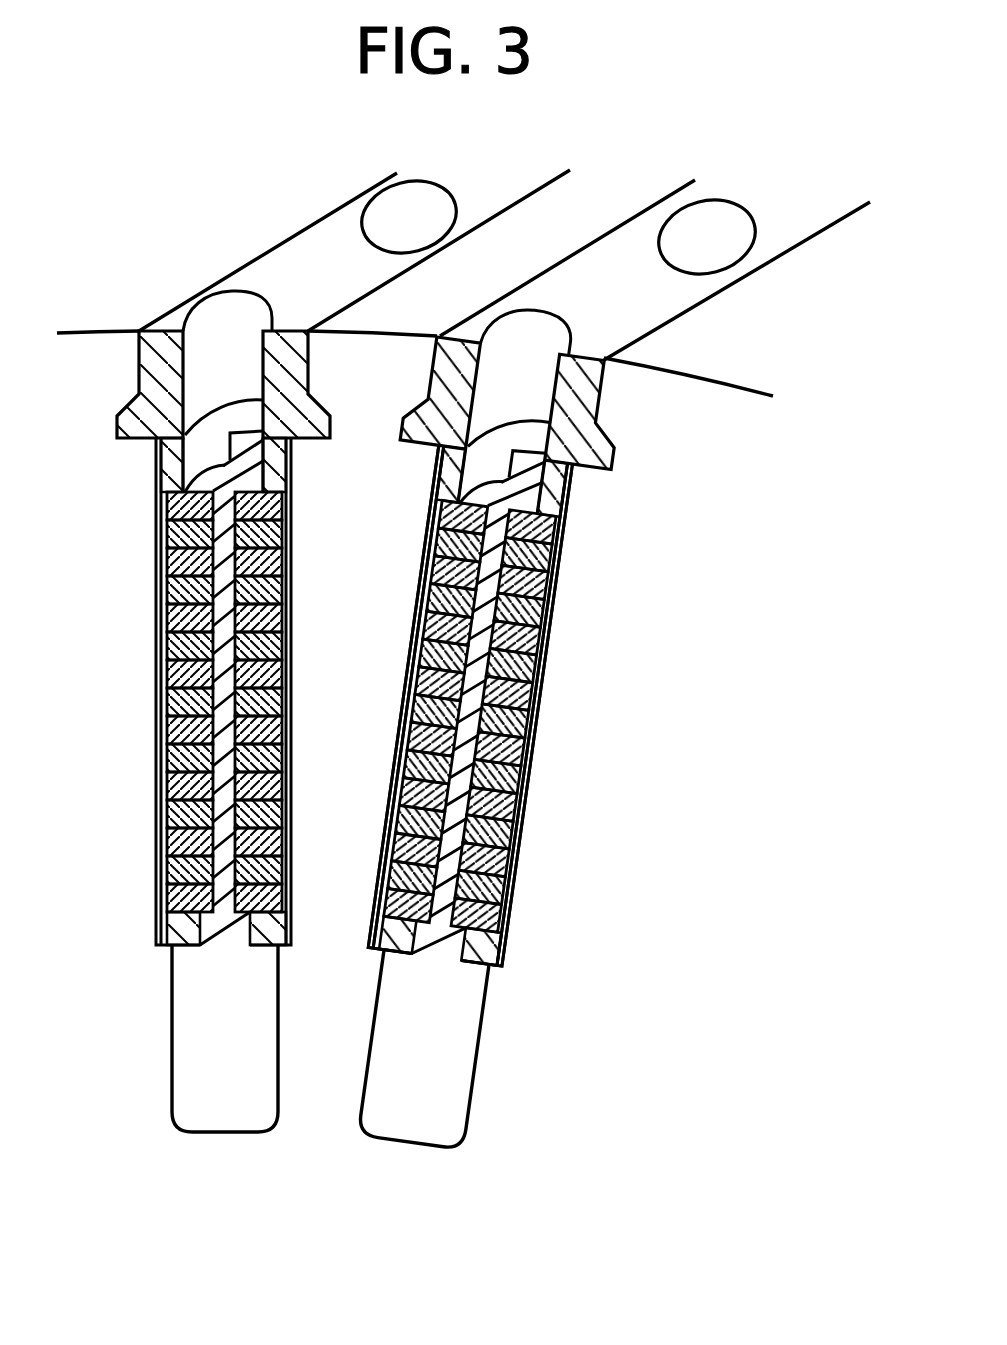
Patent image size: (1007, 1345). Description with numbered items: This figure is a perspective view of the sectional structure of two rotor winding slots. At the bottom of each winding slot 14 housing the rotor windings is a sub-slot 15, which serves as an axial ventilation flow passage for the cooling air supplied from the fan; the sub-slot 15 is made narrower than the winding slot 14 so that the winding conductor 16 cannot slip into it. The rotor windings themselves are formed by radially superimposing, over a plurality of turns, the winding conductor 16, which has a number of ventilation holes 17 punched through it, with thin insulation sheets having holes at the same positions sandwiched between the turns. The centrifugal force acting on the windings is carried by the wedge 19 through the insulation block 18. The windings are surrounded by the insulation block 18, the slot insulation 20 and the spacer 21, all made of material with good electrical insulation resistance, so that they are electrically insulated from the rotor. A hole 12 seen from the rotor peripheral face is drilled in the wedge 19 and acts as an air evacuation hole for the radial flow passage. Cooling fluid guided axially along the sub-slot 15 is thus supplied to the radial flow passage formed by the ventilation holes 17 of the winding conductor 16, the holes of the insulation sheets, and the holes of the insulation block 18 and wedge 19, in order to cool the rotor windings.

The hole 12 is at (408, 213).
The winding slot 14 is at (547, 780).
The sub-slot 15 is at (452, 1118).
The winding conductor 16 is at (533, 687).
The ventilation holes 17 is at (553, 621).
The insulation block 18 is at (550, 503).
The wedge 19 is at (583, 418).
The slot insulation 20 is at (383, 840).
The spacer 21 is at (493, 947).